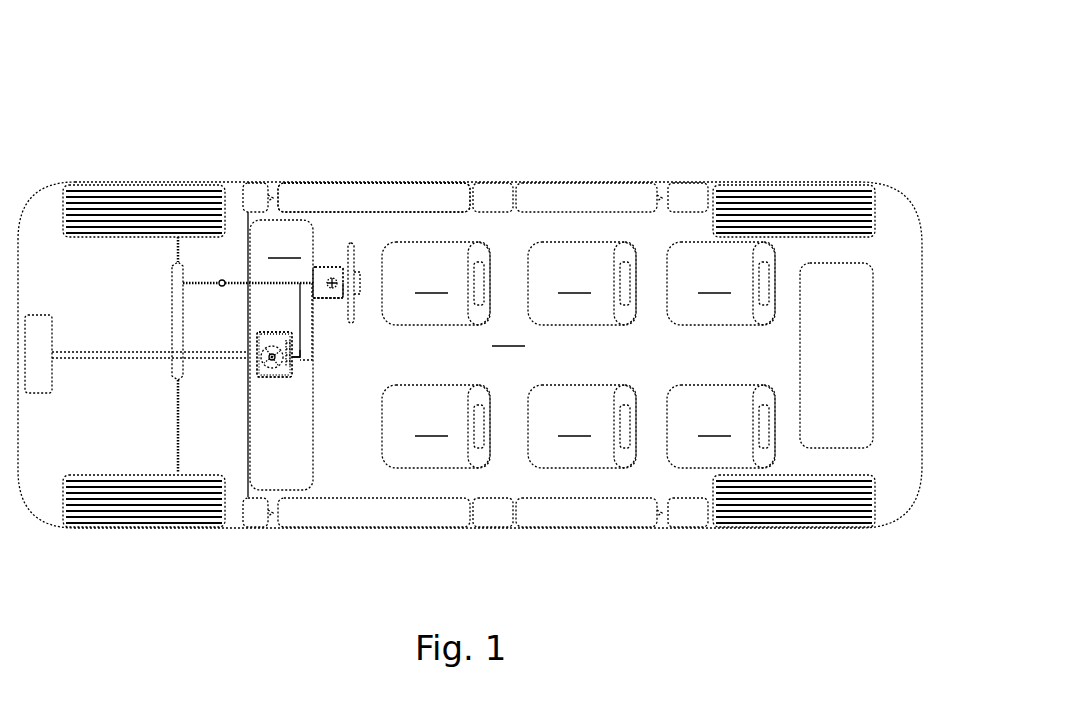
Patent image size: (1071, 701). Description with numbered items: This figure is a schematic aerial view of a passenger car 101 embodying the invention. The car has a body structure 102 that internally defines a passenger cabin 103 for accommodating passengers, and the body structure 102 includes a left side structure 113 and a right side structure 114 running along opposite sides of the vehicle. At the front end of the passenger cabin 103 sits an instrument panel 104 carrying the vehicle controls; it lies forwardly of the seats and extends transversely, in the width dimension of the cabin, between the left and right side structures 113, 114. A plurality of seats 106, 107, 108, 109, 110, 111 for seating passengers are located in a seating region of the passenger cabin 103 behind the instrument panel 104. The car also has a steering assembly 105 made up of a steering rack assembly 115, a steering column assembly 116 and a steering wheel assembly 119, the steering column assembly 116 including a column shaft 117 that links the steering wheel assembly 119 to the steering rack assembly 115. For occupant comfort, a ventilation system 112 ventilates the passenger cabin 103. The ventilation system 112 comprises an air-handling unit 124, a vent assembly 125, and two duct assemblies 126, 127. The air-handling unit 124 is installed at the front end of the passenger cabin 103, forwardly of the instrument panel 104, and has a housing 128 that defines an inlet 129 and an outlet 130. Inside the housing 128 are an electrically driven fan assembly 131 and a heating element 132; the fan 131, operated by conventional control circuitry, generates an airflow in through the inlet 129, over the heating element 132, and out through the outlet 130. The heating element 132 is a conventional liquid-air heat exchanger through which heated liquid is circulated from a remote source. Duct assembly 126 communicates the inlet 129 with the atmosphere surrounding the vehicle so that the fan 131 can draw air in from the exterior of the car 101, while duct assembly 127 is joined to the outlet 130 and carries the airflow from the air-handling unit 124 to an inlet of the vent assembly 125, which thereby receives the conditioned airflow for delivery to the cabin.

The passenger car 101 is at (827, 68).
The body structure 102 is at (470, 183).
The passenger cabin 103 is at (580, 355).
The instrument panel 104 is at (280, 354).
The steering assembly 105 is at (320, 312).
The seat 106 is at (436, 426).
The seat 107 is at (436, 283).
The seat 108 is at (582, 426).
The seat 109 is at (582, 283).
The seat 110 is at (721, 426).
The seat 111 is at (721, 283).
The ventilation system 112 is at (262, 313).
The left side structure 113 is at (640, 582).
The right side structure 114 is at (636, 130).
The steering rack assembly 115 is at (170, 300).
The steering column assembly 116 is at (331, 250).
The column shaft 117 is at (302, 283).
The steering wheel assembly 119 is at (353, 238).
The air-handling unit 124 is at (277, 392).
The vent assembly 125 is at (332, 300).
The duct assembly 126 is at (130, 352).
The duct assembly 127 is at (305, 313).
The housing 128 is at (263, 358).
The inlet 129 is at (250, 355).
The outlet 130 is at (298, 357).
The fan assembly 131 is at (271, 360).
The heating element 132 is at (294, 353).